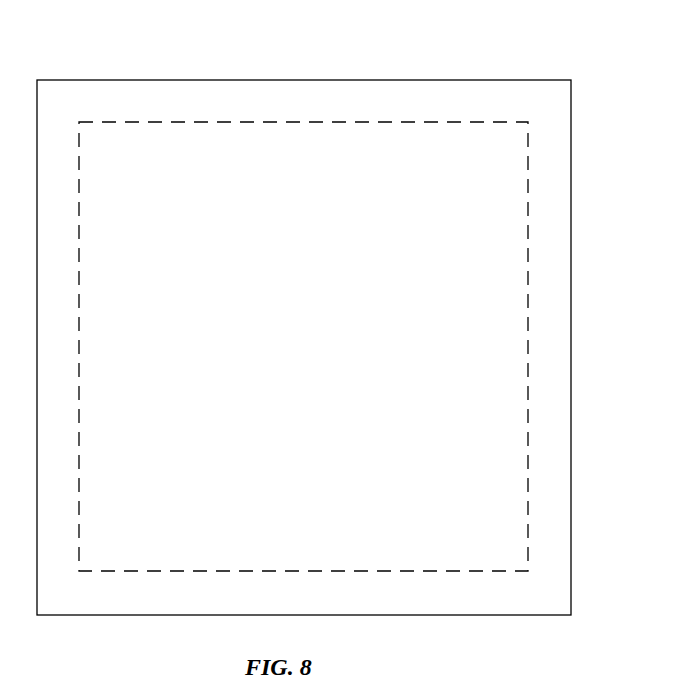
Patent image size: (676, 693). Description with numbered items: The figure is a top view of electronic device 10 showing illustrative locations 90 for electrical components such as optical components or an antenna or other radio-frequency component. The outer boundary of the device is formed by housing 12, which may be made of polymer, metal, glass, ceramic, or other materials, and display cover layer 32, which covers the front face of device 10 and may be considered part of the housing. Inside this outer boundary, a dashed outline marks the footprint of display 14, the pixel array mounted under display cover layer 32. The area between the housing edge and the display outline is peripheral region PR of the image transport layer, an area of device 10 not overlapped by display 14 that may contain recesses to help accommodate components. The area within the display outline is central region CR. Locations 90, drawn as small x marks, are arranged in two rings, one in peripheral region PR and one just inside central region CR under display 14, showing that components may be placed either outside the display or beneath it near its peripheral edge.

The device 10 is at (591, 44).
The housing 12 is at (571, 550).
The display 14 is at (529, 335).
The display cover layer 32 is at (555, 277).
The locations 90 is at (197, 96).
The central region CR is at (424, 150).
The peripheral region PR is at (554, 155).